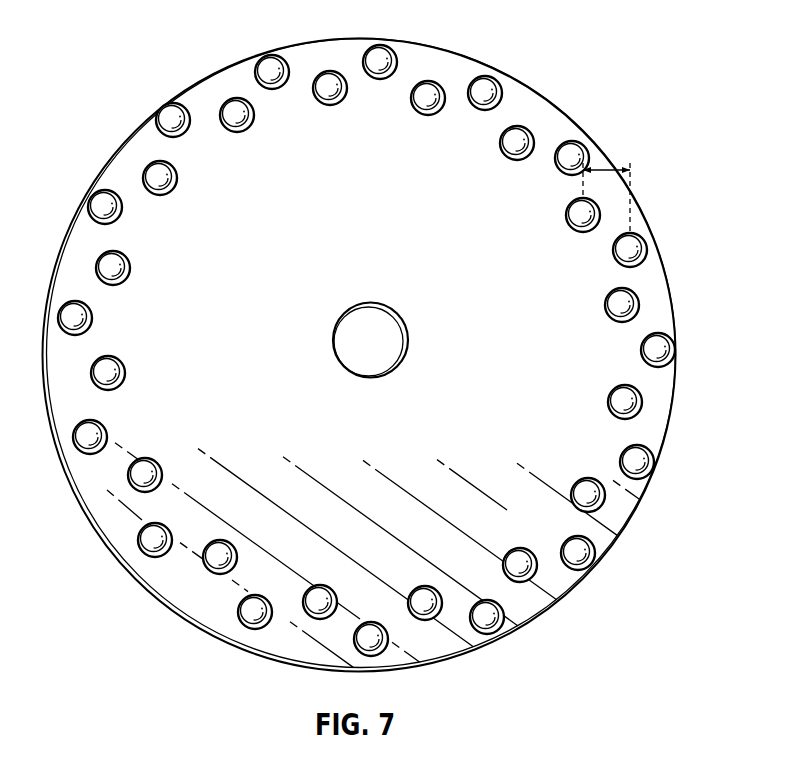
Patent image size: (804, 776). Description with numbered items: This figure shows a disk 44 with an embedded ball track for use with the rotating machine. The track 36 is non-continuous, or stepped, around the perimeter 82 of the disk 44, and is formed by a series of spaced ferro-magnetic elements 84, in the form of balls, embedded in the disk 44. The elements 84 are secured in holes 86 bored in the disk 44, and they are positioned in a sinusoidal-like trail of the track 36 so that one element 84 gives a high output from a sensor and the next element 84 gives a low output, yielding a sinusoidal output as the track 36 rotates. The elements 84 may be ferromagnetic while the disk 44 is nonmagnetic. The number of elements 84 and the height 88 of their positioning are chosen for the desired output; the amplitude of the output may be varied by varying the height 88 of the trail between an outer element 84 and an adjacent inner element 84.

The disk 44 is at (392, 355).
The perimeter 82 is at (505, 78).
The track 36 is at (663, 341).
The ferro-magnetic elements 84 is at (637, 403).
The holes 86 is at (571, 543).
The height 88 is at (614, 170).